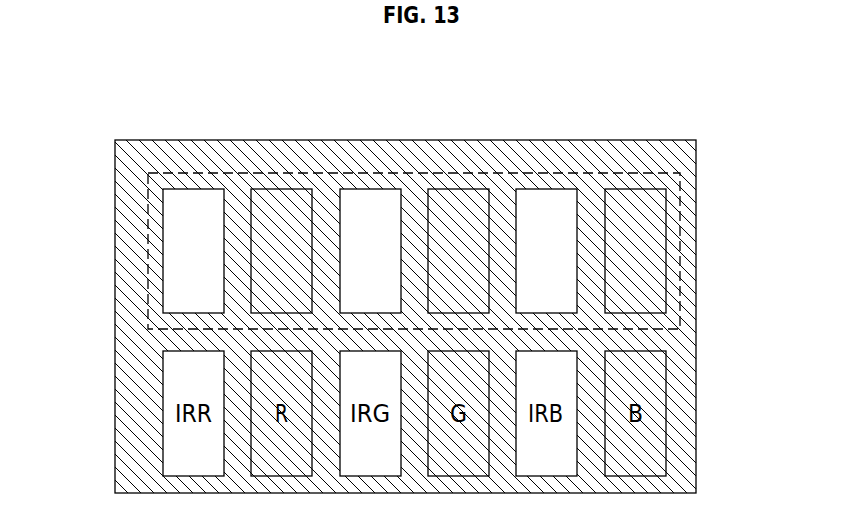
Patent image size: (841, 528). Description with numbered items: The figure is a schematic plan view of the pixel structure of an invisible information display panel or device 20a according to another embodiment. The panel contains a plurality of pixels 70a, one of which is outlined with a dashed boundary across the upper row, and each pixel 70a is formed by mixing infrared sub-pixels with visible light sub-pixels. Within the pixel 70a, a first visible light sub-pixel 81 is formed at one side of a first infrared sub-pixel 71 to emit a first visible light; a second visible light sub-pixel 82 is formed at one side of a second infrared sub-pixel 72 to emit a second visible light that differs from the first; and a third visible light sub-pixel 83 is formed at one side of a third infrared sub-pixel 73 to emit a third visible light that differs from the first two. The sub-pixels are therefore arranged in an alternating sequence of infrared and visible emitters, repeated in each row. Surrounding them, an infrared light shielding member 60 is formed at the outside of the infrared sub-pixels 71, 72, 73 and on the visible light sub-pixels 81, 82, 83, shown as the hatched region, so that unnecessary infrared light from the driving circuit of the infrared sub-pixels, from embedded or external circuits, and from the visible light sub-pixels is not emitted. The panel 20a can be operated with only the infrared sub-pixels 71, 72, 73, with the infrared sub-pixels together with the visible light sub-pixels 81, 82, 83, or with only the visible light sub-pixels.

The invisible information display panel 20a is at (115, 140).
The infrared light shielding member 60 is at (115, 205).
The pixel 70a is at (680, 248).
The first infrared sub-pixel 71 is at (193, 189).
The second infrared sub-pixel 72 is at (372, 189).
The third infrared sub-pixel 73 is at (548, 189).
The first visible light sub-pixel 81 is at (280, 189).
The second visible light sub-pixel 82 is at (457, 189).
The third visible light sub-pixel 83 is at (635, 189).